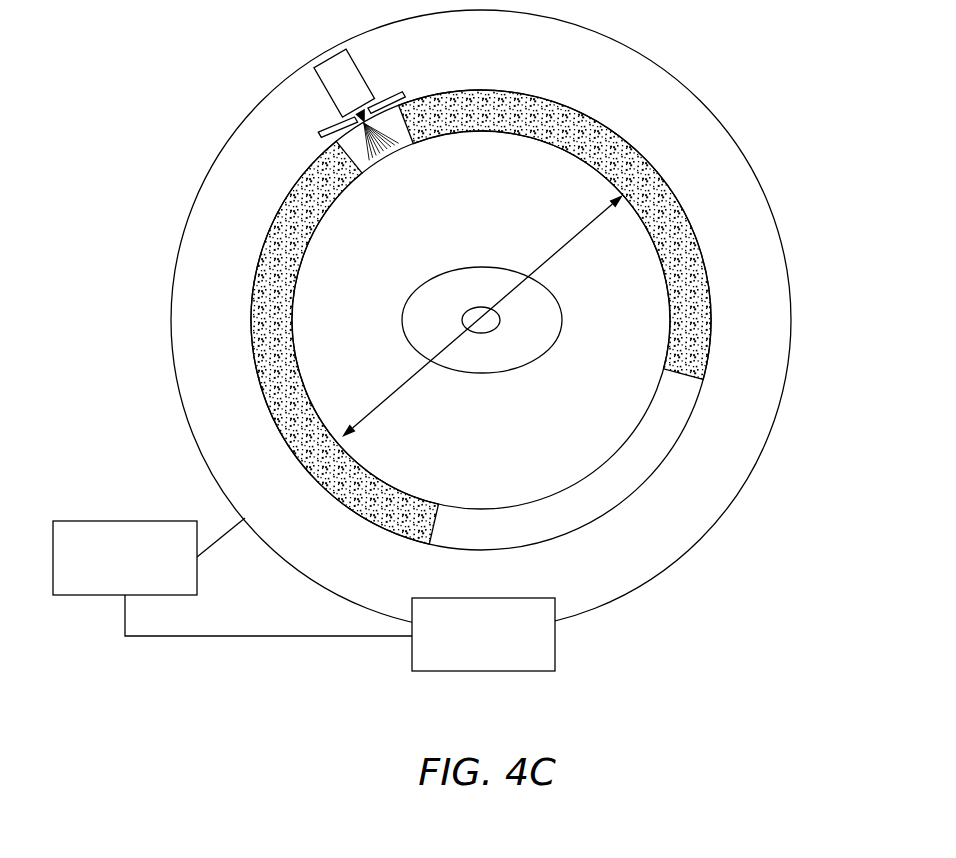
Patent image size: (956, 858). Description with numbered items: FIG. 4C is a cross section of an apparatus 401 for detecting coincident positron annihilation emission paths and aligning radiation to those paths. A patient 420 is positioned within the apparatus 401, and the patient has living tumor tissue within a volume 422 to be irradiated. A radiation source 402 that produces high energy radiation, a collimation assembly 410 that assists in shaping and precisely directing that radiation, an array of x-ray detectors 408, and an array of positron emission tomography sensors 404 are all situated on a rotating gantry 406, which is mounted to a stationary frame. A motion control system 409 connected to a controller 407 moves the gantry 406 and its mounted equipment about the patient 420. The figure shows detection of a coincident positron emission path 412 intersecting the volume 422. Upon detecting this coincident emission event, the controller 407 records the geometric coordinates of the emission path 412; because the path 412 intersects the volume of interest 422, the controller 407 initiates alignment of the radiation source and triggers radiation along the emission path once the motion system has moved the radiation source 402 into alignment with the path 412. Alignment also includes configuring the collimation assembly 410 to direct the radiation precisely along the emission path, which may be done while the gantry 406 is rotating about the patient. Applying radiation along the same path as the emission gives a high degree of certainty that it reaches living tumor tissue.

The apparatus 401 is at (730, 33).
The radiation source 402 is at (328, 57).
The array of PET sensors 404 is at (625, 150).
The rotating gantry 406 is at (331, 510).
The controller 407 is at (125, 521).
The array of x-ray detectors 408 is at (582, 512).
The motion control system 409 is at (490, 672).
The collimation assembly 410 is at (396, 90).
The coincident positron emission path 412 is at (568, 243).
The patient 420 is at (487, 273).
The volume 422 is at (486, 313).